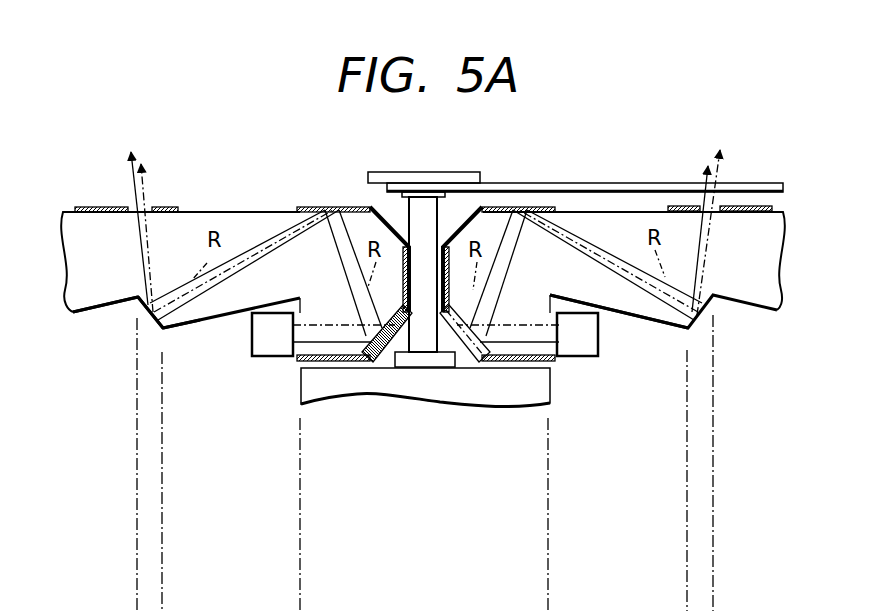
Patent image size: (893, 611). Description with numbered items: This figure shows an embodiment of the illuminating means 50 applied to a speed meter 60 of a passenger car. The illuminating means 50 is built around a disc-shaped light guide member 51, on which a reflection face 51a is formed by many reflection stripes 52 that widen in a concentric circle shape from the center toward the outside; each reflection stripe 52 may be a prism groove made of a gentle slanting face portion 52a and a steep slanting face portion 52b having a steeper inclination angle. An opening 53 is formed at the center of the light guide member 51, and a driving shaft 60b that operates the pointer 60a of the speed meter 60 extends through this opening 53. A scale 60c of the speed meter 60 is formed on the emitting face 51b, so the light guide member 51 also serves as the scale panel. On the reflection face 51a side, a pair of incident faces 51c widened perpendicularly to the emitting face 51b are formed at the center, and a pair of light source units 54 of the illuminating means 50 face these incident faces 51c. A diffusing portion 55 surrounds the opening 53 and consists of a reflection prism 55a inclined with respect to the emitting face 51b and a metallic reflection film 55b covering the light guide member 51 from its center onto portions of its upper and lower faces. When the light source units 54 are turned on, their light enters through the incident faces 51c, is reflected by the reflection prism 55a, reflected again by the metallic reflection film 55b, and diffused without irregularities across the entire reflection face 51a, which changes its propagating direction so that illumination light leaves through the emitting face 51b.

The illuminating means 50 is at (215, 169).
The light guide member 51 is at (769, 279).
The reflection face 51a is at (91, 315).
The emitting face 51b is at (261, 207).
The incident face 51c is at (302, 312).
The reflection stripe 52 is at (117, 388).
The gentle slanting face portion 52a is at (187, 327).
The steep slanting face portion 52b is at (137, 300).
The opening 53 is at (418, 268).
The light source unit 54 is at (260, 345).
The diffusing portion 55 is at (426, 420).
The reflection prism 55a is at (353, 362).
The metallic reflection film 55b is at (320, 362).
The speed meter 60 is at (443, 408).
The pointer 60a is at (515, 182).
The driving shaft 60b is at (404, 354).
The scale 60c is at (100, 206).